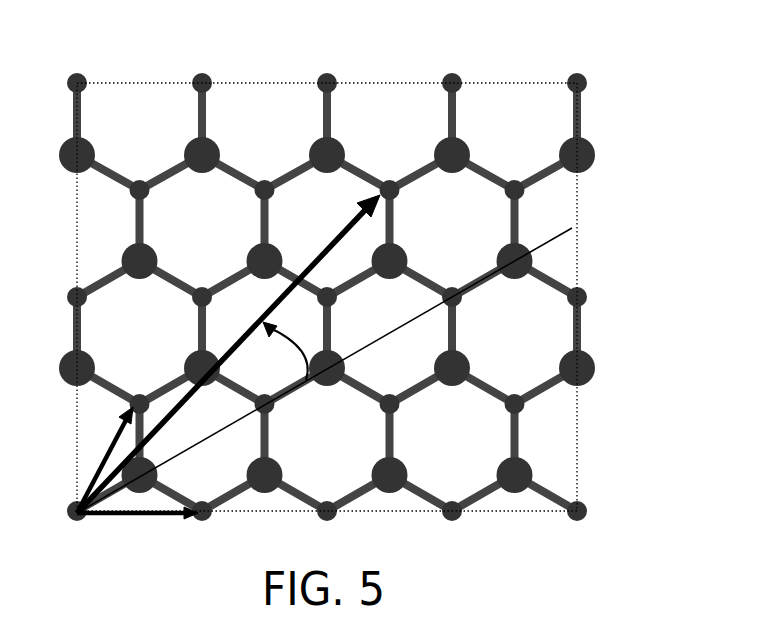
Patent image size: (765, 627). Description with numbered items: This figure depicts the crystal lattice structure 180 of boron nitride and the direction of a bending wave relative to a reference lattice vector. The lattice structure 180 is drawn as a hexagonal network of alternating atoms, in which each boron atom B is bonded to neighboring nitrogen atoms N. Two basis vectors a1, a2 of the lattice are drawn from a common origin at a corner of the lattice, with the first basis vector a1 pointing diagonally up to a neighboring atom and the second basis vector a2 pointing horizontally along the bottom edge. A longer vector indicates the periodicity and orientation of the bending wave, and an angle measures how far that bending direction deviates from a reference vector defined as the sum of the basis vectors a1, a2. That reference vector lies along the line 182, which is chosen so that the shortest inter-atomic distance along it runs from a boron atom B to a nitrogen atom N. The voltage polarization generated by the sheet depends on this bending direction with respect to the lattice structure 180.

The lattice structure 180 is at (525, 82).
The line 182 is at (553, 240).
The nitrogen atom N is at (474, 350).
The boron atom B is at (372, 421).
The first basis vector a1 is at (85, 460).
The second basis vector a2 is at (137, 537).